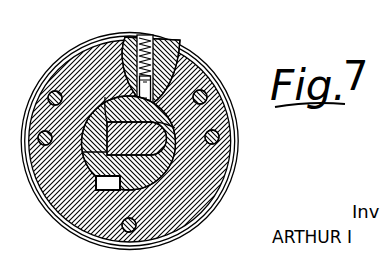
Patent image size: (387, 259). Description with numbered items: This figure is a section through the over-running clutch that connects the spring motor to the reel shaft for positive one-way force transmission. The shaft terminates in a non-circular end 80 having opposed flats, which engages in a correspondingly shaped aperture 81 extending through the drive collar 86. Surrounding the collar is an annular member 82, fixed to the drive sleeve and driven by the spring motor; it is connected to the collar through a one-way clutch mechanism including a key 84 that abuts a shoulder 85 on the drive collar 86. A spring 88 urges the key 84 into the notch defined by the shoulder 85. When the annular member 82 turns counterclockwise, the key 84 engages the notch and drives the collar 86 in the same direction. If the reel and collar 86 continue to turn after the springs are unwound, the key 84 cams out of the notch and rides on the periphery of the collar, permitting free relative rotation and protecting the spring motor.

The non-circular end 80 is at (80, 155).
The aperture 81 is at (98, 107).
The annular member 82 is at (186, 58).
The key 84 is at (152, 83).
The shoulder 85 is at (127, 35).
The drive collar 86 is at (174, 118).
The spring 88 is at (143, 39).